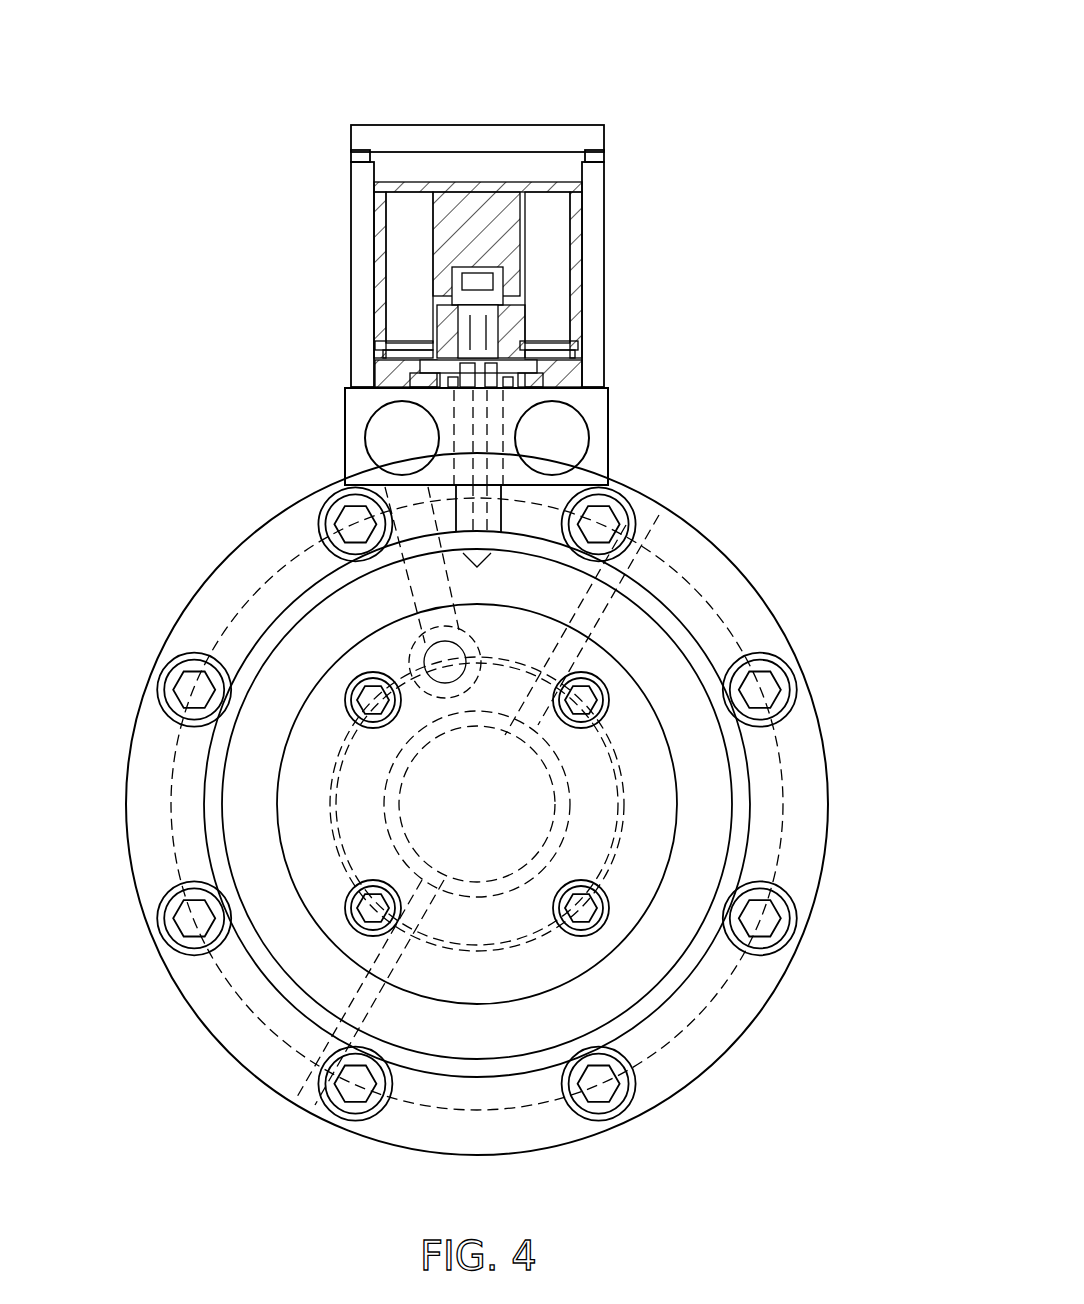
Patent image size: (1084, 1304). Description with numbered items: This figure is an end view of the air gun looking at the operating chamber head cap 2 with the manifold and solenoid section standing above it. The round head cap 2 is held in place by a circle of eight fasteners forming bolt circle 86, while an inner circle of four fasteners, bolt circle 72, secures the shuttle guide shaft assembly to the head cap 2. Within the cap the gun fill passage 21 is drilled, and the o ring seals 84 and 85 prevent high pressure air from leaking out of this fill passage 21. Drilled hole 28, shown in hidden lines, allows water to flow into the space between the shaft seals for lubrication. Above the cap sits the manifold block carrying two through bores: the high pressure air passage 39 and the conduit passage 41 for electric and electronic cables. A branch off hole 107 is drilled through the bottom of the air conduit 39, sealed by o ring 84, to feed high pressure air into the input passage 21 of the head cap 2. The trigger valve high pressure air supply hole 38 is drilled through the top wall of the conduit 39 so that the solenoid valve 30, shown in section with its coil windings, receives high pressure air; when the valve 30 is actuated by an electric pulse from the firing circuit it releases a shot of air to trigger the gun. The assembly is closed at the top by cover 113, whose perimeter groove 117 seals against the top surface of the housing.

The operating chamber head cap 2 is at (335, 1137).
The gun fill passage 21 is at (318, 565).
The drilled hole 28 is at (672, 522).
The solenoid valve 30 is at (577, 277).
The trigger valve high pressure air supply hole 38 is at (350, 387).
The high pressure air passage 39 is at (347, 422).
The conduit passage 41 is at (590, 440).
The bolt circle 72 is at (350, 925).
The O ring seal 84 is at (347, 485).
The O ring seal 85 is at (405, 668).
The bolt circle 86 is at (160, 893).
The branch off hole 107 is at (347, 475).
The cover 113 is at (538, 126).
The spacer 117 is at (600, 156).